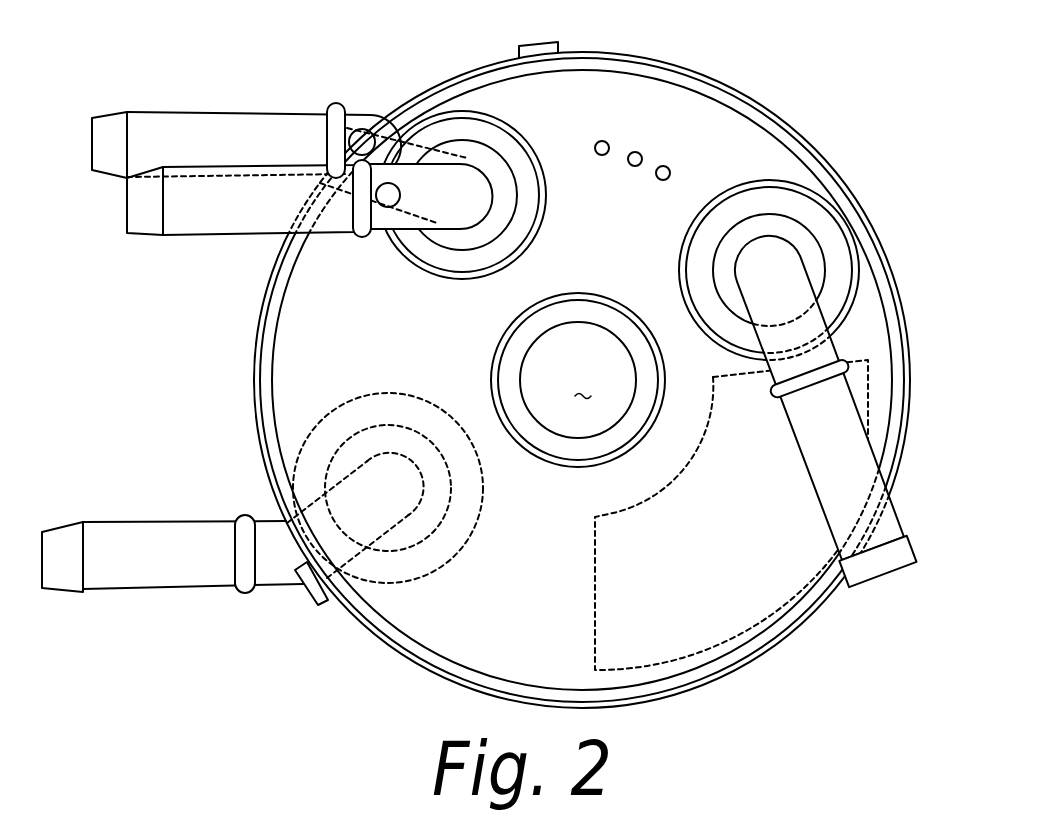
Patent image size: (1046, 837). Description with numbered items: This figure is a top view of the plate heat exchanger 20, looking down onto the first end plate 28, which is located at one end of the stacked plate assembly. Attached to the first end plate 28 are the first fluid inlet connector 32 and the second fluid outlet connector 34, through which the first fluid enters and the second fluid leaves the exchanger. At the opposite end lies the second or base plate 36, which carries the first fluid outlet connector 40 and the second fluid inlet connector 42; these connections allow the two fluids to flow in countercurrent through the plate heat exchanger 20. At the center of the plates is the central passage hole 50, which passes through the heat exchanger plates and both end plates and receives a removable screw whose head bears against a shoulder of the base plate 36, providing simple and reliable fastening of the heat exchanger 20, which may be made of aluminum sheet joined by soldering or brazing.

The plate heat exchanger 20 is at (797, 73).
The first end plate 28 is at (740, 160).
The first fluid inlet connector 32 is at (221, 212).
The second fluid outlet connector 34 is at (837, 453).
The second plate 36 is at (577, 315).
The first fluid outlet connector 40 is at (231, 118).
The second fluid inlet connector 42 is at (198, 575).
The central passage hole 50 is at (584, 382).